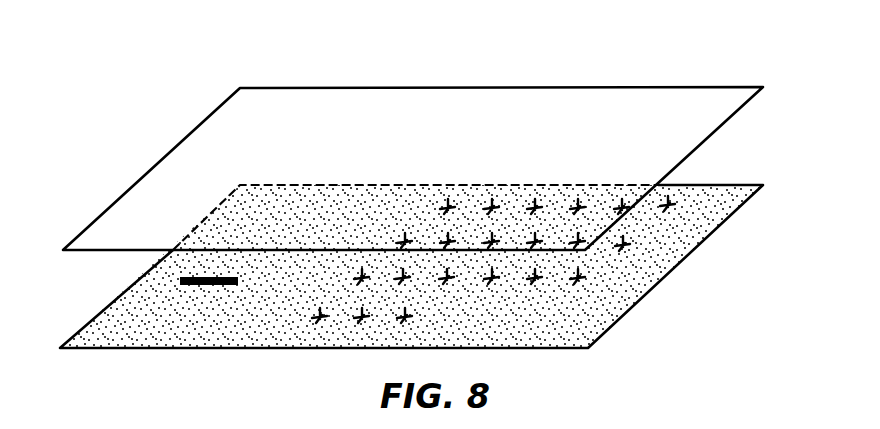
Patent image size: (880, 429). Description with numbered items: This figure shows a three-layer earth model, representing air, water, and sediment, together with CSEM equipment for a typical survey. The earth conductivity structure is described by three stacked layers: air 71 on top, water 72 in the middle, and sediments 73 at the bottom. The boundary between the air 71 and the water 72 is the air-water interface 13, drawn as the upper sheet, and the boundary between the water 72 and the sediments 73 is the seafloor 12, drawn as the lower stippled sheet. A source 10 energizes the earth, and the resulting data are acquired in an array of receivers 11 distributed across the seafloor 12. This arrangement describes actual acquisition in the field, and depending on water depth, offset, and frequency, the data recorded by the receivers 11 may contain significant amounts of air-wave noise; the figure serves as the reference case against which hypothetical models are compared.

The source 10 is at (186, 289).
The receivers 11 is at (540, 284).
The seafloor 12 is at (278, 349).
The air-water interface 13 is at (212, 110).
The air 71 is at (733, 52).
The water 72 is at (733, 157).
The sediments 73 is at (732, 257).